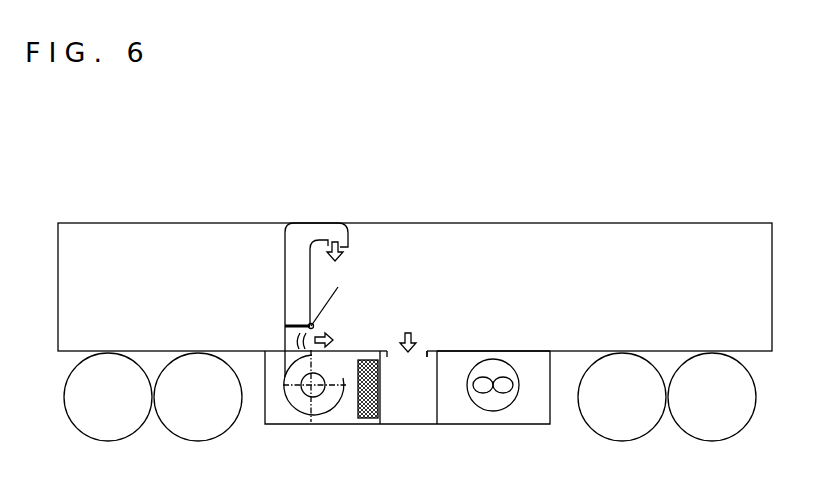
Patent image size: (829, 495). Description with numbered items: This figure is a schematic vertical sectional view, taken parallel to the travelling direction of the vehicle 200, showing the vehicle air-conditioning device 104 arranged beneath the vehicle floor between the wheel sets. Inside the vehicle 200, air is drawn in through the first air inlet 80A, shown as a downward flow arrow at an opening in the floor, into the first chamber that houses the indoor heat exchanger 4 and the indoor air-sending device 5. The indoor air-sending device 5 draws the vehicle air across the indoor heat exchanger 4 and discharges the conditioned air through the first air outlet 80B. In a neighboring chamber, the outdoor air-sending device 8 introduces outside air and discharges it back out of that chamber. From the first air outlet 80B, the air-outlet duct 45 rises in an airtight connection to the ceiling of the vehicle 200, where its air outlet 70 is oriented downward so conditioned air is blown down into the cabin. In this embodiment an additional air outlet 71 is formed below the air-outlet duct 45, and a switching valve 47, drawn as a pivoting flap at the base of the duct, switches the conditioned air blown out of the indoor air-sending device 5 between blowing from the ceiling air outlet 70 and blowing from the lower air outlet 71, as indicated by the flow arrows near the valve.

The vehicle 200 is at (602, 242).
The air-outlet duct 45 is at (283, 250).
The air outlet 70 is at (352, 240).
The switching valve 47 is at (338, 288).
The air outlet 71 is at (320, 325).
The first air outlet 80B is at (285, 330).
The first air inlet 80A is at (422, 348).
The vehicle air-conditioning device 104 is at (517, 350).
The indoor air-sending device 5 is at (318, 403).
The indoor heat exchanger 4 is at (378, 418).
The outdoor air-sending device 8 is at (497, 397).